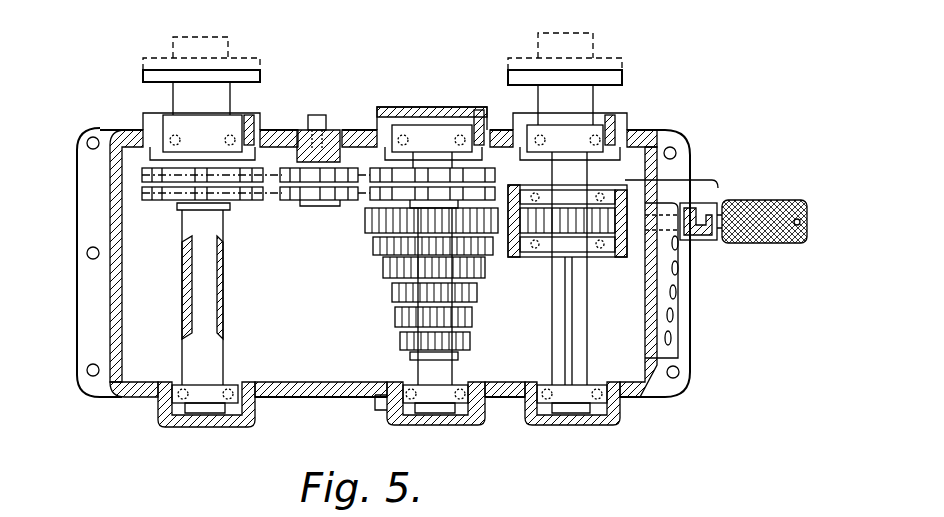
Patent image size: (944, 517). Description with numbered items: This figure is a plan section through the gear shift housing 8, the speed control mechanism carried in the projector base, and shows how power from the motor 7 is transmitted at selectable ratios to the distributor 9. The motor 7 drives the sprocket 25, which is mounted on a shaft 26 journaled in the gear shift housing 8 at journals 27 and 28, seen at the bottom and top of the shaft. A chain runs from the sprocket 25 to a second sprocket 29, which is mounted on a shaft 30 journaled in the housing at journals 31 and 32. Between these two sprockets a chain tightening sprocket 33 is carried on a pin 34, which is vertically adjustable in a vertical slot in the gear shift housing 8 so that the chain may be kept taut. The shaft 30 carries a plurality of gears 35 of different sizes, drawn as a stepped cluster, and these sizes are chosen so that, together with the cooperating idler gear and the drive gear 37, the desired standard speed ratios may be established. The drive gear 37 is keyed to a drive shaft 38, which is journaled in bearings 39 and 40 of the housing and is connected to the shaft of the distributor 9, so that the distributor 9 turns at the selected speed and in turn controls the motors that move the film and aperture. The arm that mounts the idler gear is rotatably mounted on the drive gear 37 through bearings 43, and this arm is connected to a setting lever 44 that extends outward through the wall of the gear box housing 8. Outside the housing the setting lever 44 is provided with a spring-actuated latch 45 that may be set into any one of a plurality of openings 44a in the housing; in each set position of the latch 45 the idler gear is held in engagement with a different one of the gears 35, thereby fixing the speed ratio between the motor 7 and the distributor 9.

The motor 7 is at (183, 38).
The gear shift housing 8 is at (127, 406).
The distributor 9 is at (590, 40).
The sprocket 25 is at (160, 202).
The shaft 26 is at (207, 293).
The journal 27 is at (193, 395).
The journal 28 is at (207, 136).
The sprocket 29 is at (358, 207).
The shaft 30 is at (450, 373).
The journal 31 is at (423, 390).
The journal 32 is at (428, 140).
The chain tightening sprocket 33 is at (288, 205).
The pin 34 is at (312, 118).
The gears 35 is at (397, 340).
The drive gear 37 is at (535, 222).
The drive shaft 38 is at (580, 317).
The bearing 39 is at (568, 397).
The bearing 40 is at (578, 137).
The bearings 43 is at (603, 250).
The setting lever 44 is at (517, 193).
The openings 44a is at (673, 313).
The spring-actuated latch 45 is at (773, 200).